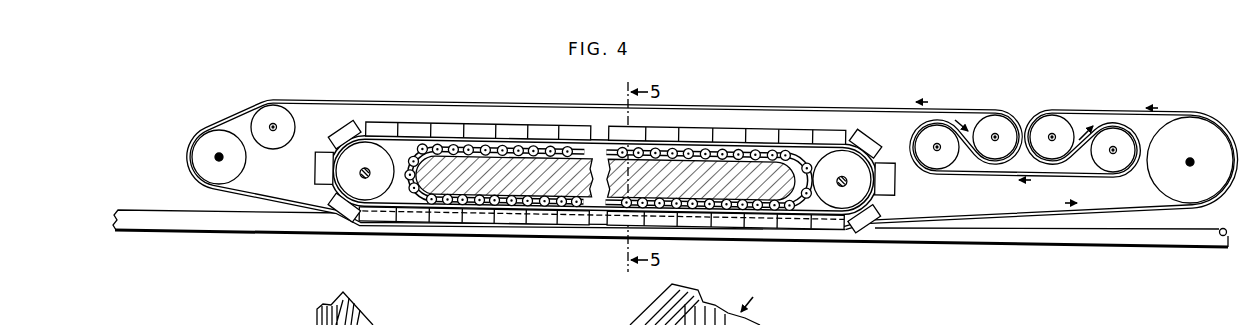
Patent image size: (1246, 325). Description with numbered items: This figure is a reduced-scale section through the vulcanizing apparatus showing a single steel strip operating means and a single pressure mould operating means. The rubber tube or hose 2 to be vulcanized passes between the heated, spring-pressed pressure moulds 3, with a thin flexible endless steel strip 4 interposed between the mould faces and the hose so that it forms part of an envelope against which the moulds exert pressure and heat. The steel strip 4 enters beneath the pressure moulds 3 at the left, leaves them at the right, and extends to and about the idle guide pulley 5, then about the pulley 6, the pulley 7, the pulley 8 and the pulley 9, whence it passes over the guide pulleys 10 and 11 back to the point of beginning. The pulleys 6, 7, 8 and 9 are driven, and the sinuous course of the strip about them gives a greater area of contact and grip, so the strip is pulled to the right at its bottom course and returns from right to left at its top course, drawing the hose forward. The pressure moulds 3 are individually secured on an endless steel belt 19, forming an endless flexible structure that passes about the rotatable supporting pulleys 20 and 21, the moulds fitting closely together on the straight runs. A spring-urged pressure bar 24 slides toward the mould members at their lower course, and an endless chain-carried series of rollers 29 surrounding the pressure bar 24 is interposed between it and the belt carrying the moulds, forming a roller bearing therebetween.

The rubber tube or hose 2 is at (1008, 249).
The pressure moulds 3 is at (331, 139).
The steel strip 4 is at (773, 108).
The pulley 5 is at (1190, 160).
The pulley 6 is at (1062, 124).
The pulley 7 is at (1117, 164).
The pulley 8 is at (928, 158).
The pulley 9 is at (1007, 122).
The guide pulley 10 is at (262, 110).
The guide pulley 11 is at (206, 150).
The endless steel belt 19 is at (800, 132).
The rotatable supporting pulley 20 is at (364, 170).
The rotatable supporting pulley 21 is at (841, 179).
The pressure bar 24 is at (483, 158).
The rollers 29 is at (449, 199).